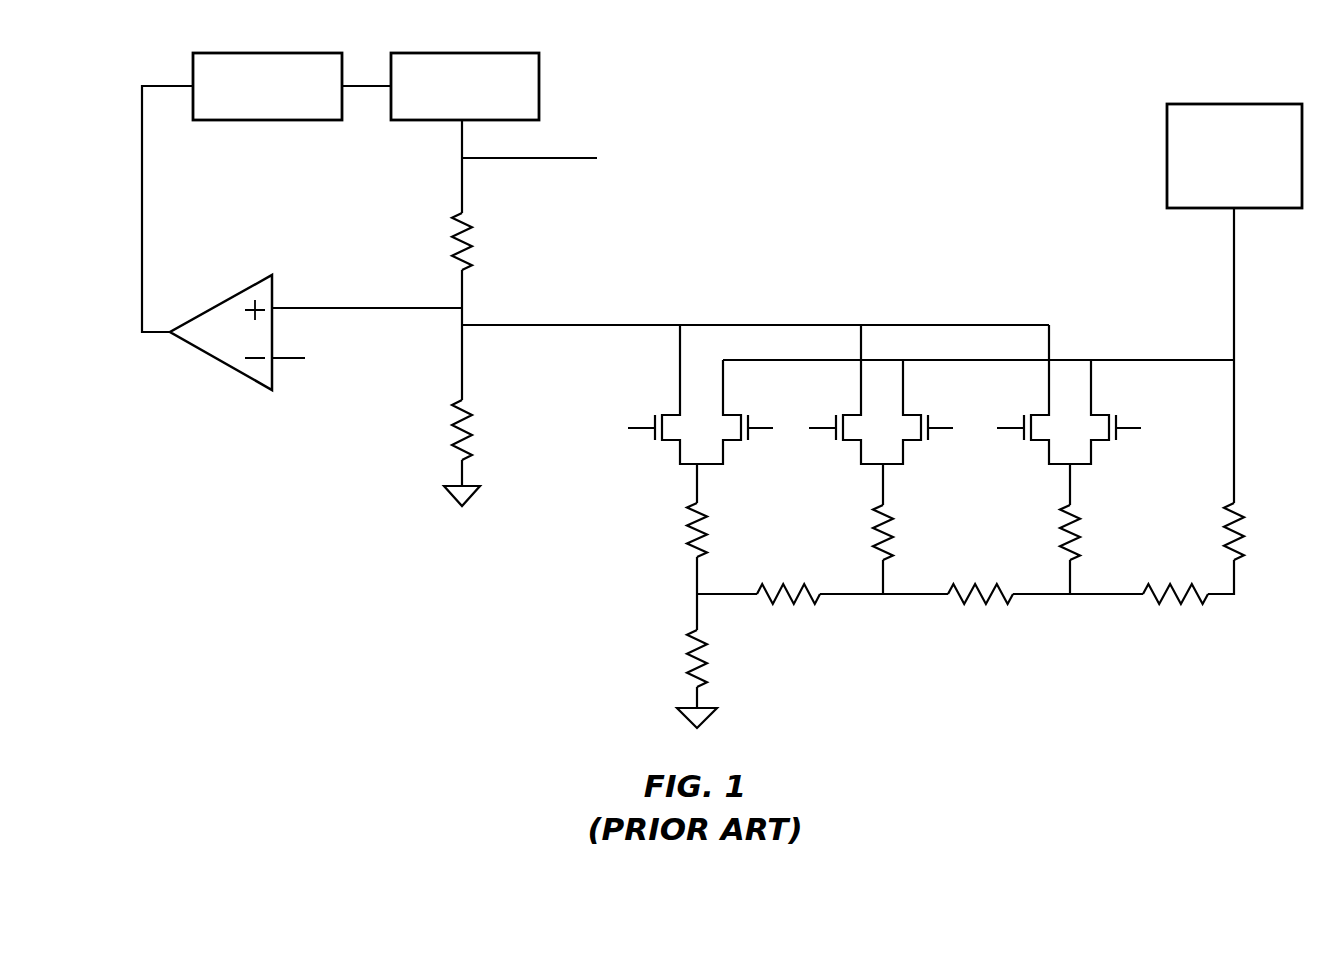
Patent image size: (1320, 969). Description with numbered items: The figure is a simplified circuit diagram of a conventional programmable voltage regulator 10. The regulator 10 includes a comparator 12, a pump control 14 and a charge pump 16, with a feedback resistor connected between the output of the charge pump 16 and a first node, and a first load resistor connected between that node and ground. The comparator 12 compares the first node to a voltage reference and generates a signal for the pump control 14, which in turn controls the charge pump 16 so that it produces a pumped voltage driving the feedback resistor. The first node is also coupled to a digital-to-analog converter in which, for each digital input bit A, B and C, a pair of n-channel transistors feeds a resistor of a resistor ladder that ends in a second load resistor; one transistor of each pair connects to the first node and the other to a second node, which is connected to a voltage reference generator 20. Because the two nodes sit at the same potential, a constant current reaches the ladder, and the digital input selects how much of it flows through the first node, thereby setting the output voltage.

The programmable voltage regulator 10 is at (818, 93).
The comparator 12 is at (229, 371).
The pump control 14 is at (256, 110).
The charge pump 16 is at (454, 110).
The voltage reference generator 20 is at (1222, 204).